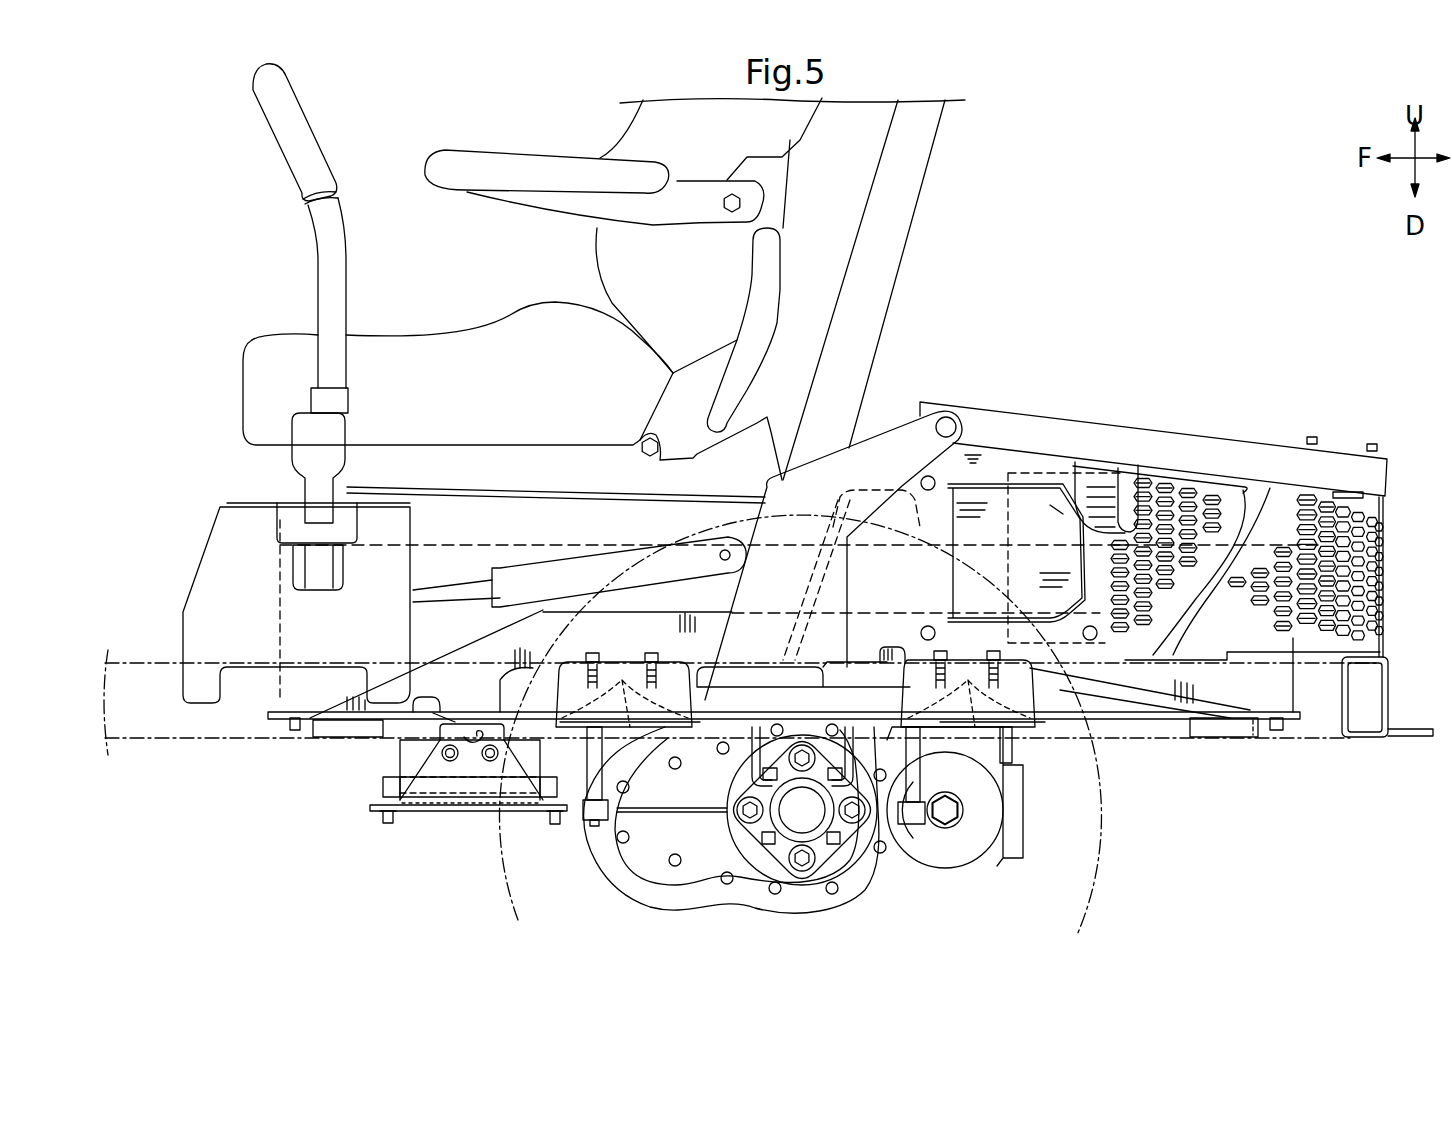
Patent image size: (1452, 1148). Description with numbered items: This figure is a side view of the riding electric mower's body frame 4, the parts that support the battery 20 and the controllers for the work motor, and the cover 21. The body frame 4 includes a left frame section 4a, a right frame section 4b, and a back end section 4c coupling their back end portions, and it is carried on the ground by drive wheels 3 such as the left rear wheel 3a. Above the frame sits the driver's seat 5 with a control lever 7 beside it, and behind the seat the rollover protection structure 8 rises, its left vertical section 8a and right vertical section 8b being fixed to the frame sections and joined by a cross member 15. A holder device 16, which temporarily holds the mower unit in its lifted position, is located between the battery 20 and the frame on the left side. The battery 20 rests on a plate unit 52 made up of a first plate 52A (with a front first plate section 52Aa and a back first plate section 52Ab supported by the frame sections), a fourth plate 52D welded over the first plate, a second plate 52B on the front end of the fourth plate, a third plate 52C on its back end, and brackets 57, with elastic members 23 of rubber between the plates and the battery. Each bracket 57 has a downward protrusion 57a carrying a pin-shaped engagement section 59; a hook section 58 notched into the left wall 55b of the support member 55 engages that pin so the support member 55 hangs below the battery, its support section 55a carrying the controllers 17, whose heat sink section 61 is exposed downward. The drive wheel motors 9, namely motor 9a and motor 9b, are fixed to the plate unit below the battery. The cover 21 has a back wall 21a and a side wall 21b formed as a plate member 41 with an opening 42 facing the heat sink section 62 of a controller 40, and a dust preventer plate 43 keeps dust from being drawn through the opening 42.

The control lever 7 is at (327, 233).
The driver's seat 5 is at (530, 305).
The left vertical section 8a is at (754, 289).
The right vertical section 8b is at (902, 208).
The rollover protection structure (ROPS) 8 is at (754, 289).
The left rear wheel 3a is at (697, 492).
The drive wheel 3 is at (568, 576).
The cross member 15 is at (857, 490).
The holder device 16 is at (527, 578).
The bracket 57 is at (476, 643).
The downward protrusion 57a is at (433, 718).
The hook section 58 is at (486, 732).
The plate member 41 is at (973, 455).
The plate unit 52 is at (751, 726).
The second plate 52B is at (316, 702).
The first plate 52A is at (839, 834).
The front first plate section 52Aa is at (640, 737).
The back first plate section 52Ab is at (982, 790).
The third plate 52C is at (1213, 720).
The fourth plate 52D is at (1130, 697).
The support member 55 is at (444, 825).
The support section 55a is at (411, 813).
The left wall 55b is at (417, 763).
The engagement section 59 is at (470, 765).
The heat sink section 61 is at (539, 842).
The elastic member 23 is at (650, 705).
The controller 17 is at (590, 806).
The drive wheel motor 9 is at (803, 835).
The motor 9a is at (747, 850).
The motor 9b is at (937, 848).
The body frame 4 is at (768, 725).
The left frame section 4a is at (742, 725).
The right frame section 4b is at (237, 740).
The back end section 4c is at (1365, 722).
The battery 20 is at (1285, 680).
The cover 21 is at (1240, 446).
The back wall 21a is at (1387, 523).
The side wall 21b is at (1190, 478).
The heat sink section 62 is at (1092, 490).
The dust preventer plate 43 is at (1097, 490).
The controller 40 is at (1120, 500).
The opening 42 is at (1070, 547).